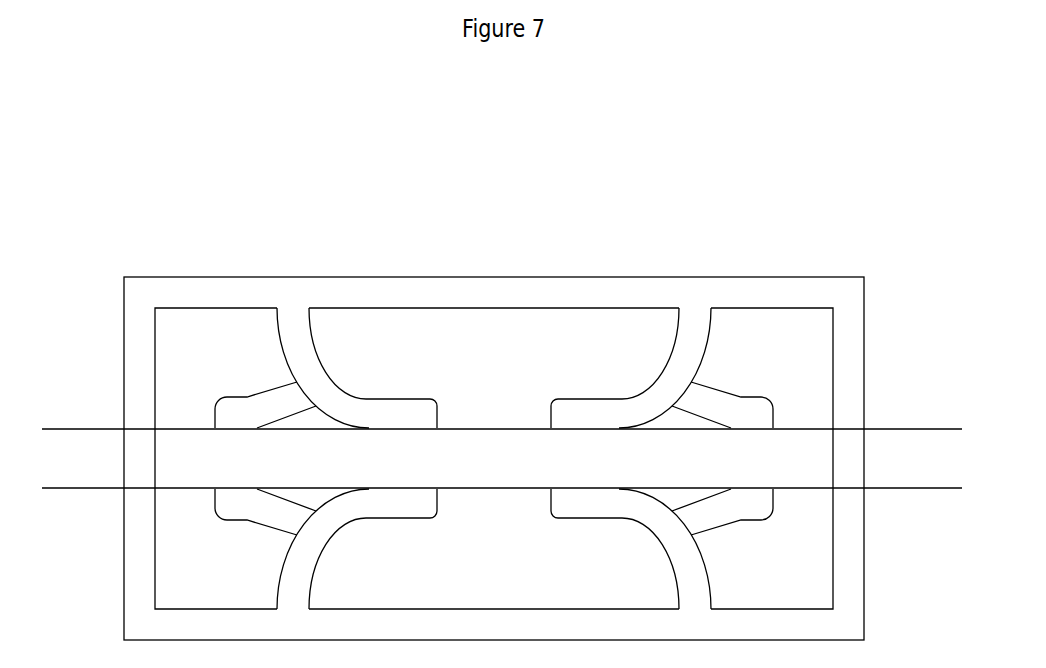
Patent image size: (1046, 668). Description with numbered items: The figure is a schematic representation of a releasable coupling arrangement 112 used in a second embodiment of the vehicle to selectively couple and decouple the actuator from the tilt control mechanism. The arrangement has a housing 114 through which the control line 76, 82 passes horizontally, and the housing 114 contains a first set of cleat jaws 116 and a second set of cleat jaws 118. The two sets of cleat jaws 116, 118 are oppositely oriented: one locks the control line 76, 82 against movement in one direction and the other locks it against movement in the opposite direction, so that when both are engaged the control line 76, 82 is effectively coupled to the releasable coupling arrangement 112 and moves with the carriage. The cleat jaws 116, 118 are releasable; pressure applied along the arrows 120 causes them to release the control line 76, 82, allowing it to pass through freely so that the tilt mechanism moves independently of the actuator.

The releasable coupling arrangement 112 is at (502, 415).
The housing 114 is at (374, 277).
The first set of cleat jaws 116 is at (408, 387).
The second set of cleat jaws 118 is at (607, 392).
The arrows 120 is at (208, 415).
The control line 76 is at (502, 428).
The control line 82 is at (484, 428).